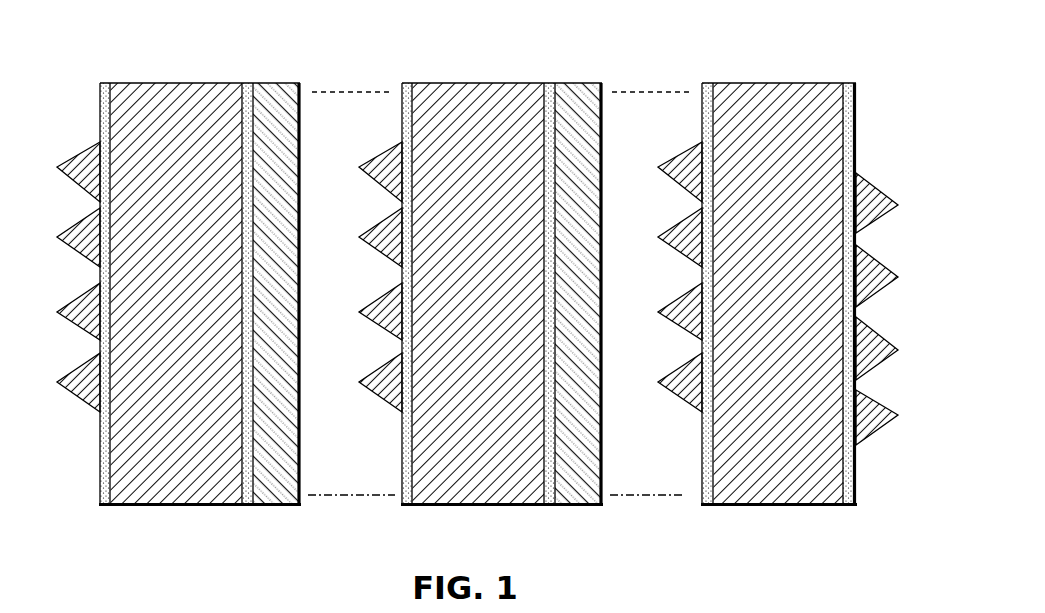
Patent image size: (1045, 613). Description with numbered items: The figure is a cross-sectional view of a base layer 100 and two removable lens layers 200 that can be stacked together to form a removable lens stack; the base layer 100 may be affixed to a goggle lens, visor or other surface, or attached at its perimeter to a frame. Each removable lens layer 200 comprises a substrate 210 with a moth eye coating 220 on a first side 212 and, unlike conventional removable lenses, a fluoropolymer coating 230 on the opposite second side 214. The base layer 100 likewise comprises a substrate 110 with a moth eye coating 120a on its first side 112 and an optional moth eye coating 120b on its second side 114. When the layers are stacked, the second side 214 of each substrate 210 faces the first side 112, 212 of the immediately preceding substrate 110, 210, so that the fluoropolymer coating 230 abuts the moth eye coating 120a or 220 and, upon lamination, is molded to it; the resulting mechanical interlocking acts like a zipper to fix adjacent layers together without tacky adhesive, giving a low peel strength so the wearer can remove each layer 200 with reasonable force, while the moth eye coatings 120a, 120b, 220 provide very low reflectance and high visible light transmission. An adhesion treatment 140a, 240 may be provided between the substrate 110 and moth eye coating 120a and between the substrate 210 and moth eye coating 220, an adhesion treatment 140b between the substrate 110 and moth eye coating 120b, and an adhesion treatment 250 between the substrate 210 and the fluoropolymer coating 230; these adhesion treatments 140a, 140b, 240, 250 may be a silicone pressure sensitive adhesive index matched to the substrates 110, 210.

The base layer 100 is at (898, 77).
The substrate 110 is at (790, 482).
The first side 112 is at (712, 462).
The second side 114 is at (845, 465).
The moth eye coating 120a is at (674, 386).
The moth eye coating 120b is at (889, 416).
The adhesion treatment 140a is at (707, 124).
The adhesion treatment 140b is at (852, 117).
The removable lens layer 200 is at (298, 77).
The substrate 210 is at (188, 483).
The first side 212 is at (110, 460).
The second side 214 is at (244, 462).
The moth eye coating 220 is at (72, 386).
The fluoropolymer coating 230 is at (288, 270).
The adhesion treatment 240 is at (105, 122).
The adhesion treatment 250 is at (247, 200).